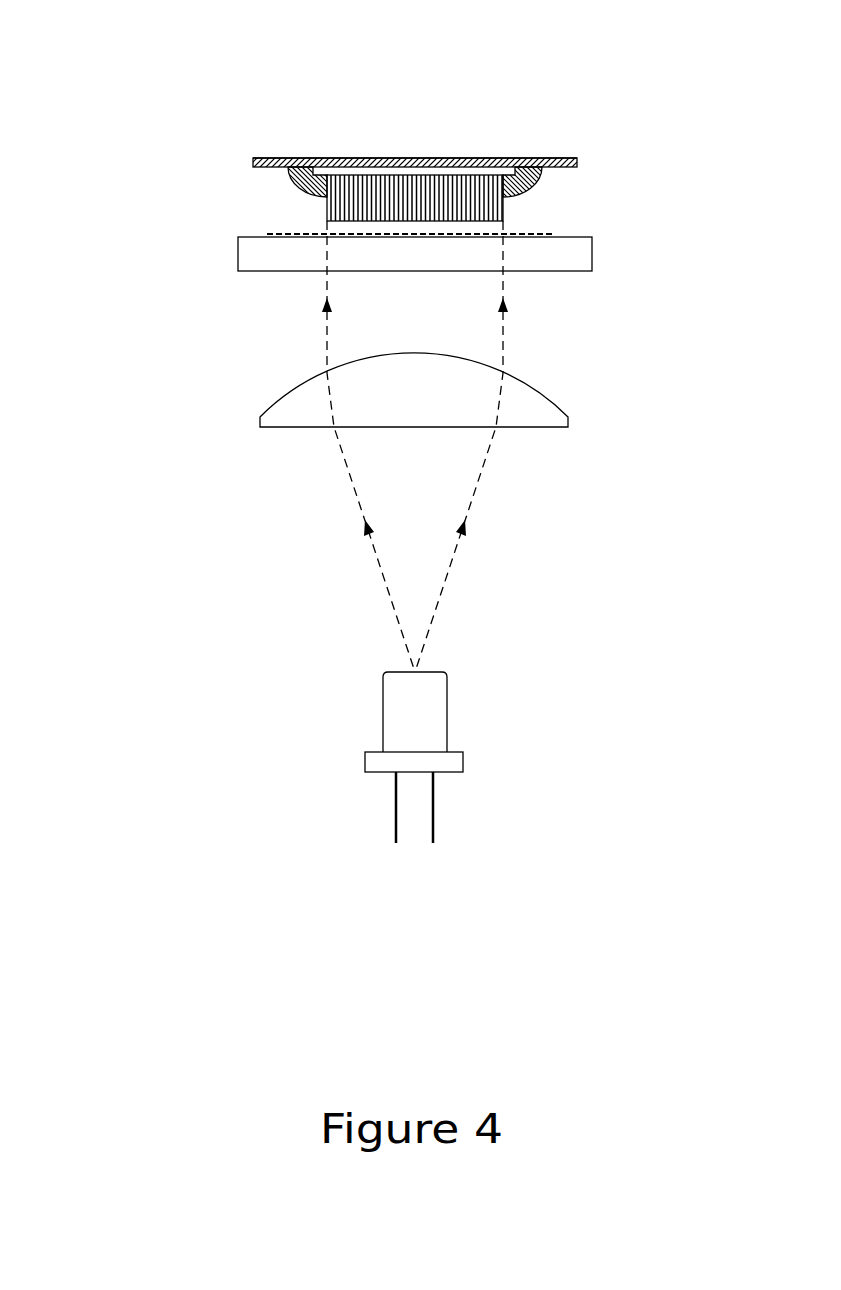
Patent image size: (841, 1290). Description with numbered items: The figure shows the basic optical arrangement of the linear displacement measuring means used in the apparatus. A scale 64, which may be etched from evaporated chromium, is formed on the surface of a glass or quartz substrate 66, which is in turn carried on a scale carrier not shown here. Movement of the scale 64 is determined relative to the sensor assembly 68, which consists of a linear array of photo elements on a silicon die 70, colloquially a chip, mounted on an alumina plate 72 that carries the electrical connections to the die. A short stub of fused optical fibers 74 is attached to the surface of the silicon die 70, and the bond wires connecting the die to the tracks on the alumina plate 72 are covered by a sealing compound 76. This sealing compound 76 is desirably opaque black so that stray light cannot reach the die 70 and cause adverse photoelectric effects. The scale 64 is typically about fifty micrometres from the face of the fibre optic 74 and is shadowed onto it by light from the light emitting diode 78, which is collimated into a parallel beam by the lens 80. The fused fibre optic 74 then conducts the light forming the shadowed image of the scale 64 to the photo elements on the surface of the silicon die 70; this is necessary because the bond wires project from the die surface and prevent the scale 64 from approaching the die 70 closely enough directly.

The scale 64 is at (557, 232).
The substrate 66 is at (232, 255).
The sensor assembly 68 is at (577, 158).
The silicon die 70 is at (447, 167).
The alumina plate 72 is at (356, 155).
The fused optical fibers 74 is at (320, 210).
The sealing compound 76 is at (541, 183).
The light emitting diode 78 is at (452, 713).
The lens 80 is at (553, 398).